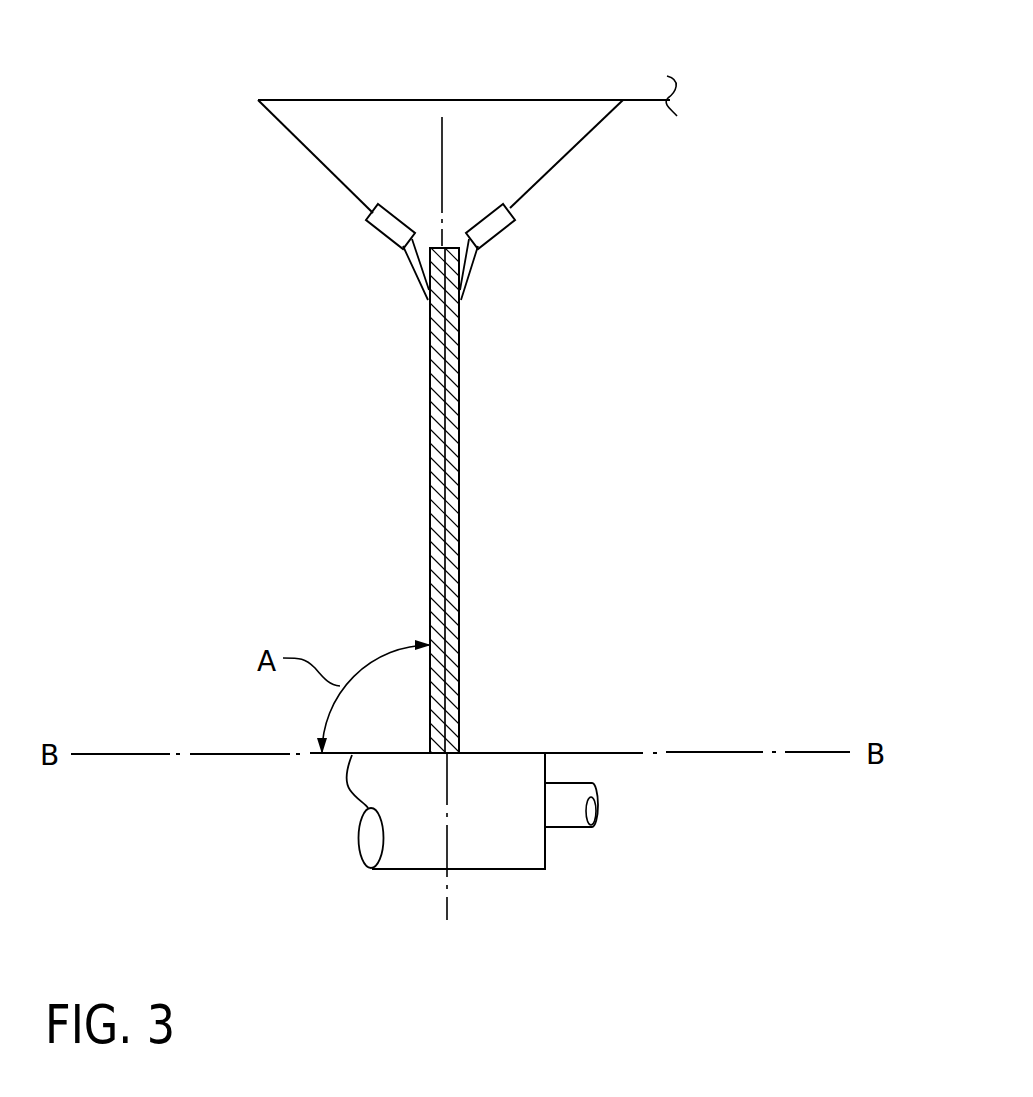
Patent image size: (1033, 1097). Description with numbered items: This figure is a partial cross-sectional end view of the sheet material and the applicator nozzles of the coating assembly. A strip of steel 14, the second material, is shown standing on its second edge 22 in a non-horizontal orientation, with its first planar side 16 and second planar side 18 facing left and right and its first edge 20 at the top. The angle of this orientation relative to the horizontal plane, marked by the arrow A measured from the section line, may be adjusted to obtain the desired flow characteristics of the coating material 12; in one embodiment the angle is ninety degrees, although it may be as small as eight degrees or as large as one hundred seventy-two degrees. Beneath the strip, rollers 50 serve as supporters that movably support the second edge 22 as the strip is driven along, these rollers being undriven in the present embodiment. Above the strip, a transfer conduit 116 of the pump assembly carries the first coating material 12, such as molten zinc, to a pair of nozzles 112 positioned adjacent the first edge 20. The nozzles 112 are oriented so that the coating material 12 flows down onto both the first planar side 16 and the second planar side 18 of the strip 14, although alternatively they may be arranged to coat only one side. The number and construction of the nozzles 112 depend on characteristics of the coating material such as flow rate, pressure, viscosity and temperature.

The coating material 12 is at (412, 271).
The strip of steel 14 is at (460, 501).
The first planar side 16 is at (460, 420).
The second planar side 18 is at (429, 582).
The first edge 20 is at (450, 244).
The second edge 22 is at (462, 757).
The rollers 50 is at (415, 850).
The nozzles 112 is at (388, 237).
The transfer conduit 116 is at (636, 99).